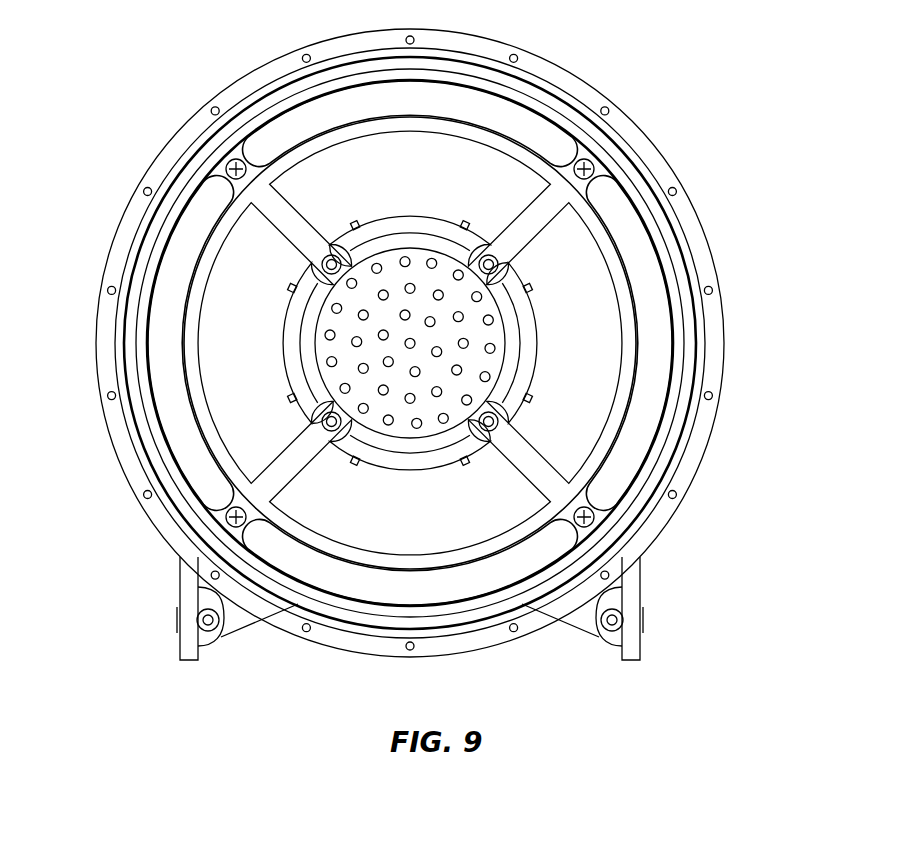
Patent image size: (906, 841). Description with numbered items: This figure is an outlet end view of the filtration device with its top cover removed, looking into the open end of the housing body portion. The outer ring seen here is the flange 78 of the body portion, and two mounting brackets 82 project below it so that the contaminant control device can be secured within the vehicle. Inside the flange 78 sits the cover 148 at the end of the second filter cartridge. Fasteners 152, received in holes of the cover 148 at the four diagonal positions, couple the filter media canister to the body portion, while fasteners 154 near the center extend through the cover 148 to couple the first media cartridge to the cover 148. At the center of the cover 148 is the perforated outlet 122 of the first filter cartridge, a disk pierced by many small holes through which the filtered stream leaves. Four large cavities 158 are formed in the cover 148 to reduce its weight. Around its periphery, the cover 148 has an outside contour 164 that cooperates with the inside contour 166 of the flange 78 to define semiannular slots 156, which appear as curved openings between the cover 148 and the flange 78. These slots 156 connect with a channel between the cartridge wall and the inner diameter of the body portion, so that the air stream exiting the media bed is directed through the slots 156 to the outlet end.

The flange 78 is at (722, 376).
The mounting brackets 82 is at (186, 646).
The perforated outlet 122 is at (472, 385).
The cover 148 is at (641, 538).
The fasteners 152 is at (226, 164).
The fasteners 154 is at (498, 265).
The semiannular slots 156 is at (510, 115).
The cavities 158 is at (432, 184).
The outside contour 164 is at (180, 345).
The inside contour 166 is at (165, 405).